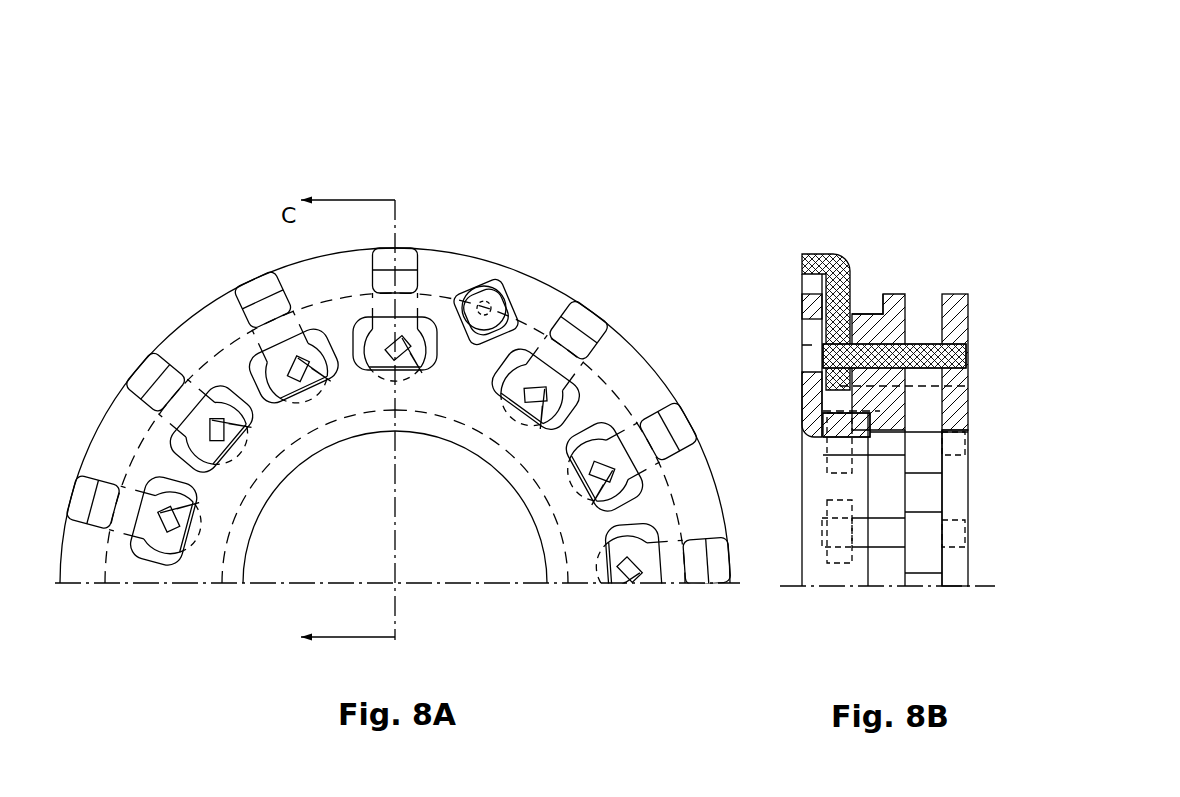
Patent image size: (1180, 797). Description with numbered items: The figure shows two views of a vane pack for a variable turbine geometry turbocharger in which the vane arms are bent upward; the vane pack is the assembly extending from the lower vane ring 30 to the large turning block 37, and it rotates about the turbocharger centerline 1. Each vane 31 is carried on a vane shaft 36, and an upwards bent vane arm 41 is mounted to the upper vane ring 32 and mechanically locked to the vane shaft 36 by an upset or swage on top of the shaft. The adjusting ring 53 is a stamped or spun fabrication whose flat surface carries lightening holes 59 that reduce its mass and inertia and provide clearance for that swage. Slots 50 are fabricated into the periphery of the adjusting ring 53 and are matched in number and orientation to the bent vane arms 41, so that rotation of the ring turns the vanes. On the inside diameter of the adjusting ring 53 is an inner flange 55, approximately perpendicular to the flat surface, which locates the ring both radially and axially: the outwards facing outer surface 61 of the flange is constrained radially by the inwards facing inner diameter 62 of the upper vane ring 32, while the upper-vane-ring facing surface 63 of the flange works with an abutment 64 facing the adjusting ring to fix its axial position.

In FIG. 8B, the turbocharger centerline 1 is at (992, 586).
In FIG. 8B, the lower vane ring 30 is at (957, 320).
In FIG. 8A, the vane 31 is at (535, 439).
In FIG. 8B, the vane 31 is at (927, 393).
In FIG. 8B, the upper vane ring 32 is at (890, 326).
In FIG. 8B, the vane shaft 36 is at (968, 350).
In FIG. 8A, the large turning block 37 is at (535, 439).
In FIG. 8A, the upwards bent vane arm 41 is at (578, 293).
In FIG. 8B, the upwards bent vane arm 41 is at (855, 314).
In FIG. 8A, the slot 50 is at (167, 358).
In FIG. 8A, the adjusting ring 53 is at (320, 303).
In FIG. 8B, the adjusting ring 53 is at (810, 276).
In FIG. 8A, the inner flange 55 is at (300, 453).
In FIG. 8B, the inner flange 55 is at (870, 433).
In FIG. 8A, the lightening hole 59 is at (263, 353).
In FIG. 8B, the lightening hole 59 is at (802, 345).
In FIG. 8A, the outwards facing outer surface 61 is at (310, 433).
In FIG. 8A, the inwards facing inner diameter 62 is at (338, 437).
In FIG. 8B, the upper-vane-ring facing surface 63 is at (862, 445).
In FIG. 8B, the abutment 64 is at (873, 423).